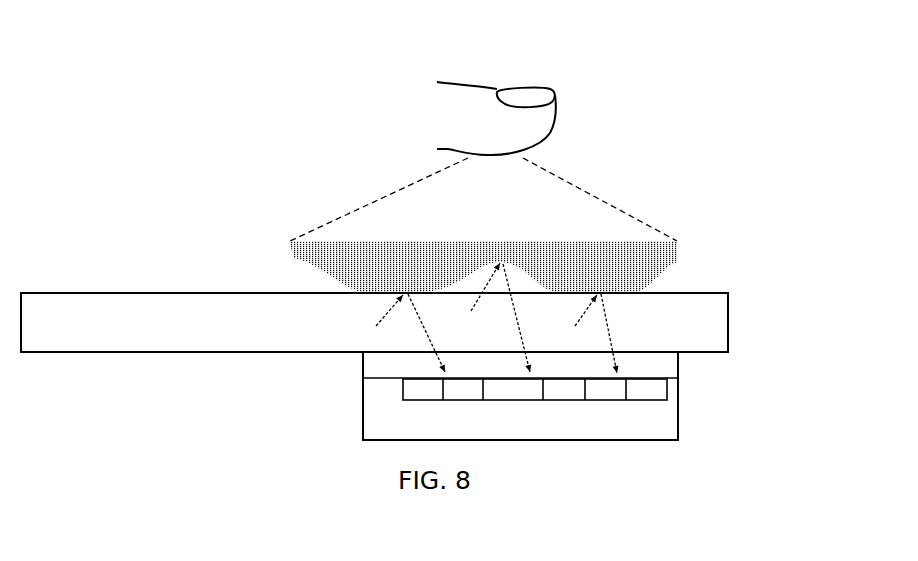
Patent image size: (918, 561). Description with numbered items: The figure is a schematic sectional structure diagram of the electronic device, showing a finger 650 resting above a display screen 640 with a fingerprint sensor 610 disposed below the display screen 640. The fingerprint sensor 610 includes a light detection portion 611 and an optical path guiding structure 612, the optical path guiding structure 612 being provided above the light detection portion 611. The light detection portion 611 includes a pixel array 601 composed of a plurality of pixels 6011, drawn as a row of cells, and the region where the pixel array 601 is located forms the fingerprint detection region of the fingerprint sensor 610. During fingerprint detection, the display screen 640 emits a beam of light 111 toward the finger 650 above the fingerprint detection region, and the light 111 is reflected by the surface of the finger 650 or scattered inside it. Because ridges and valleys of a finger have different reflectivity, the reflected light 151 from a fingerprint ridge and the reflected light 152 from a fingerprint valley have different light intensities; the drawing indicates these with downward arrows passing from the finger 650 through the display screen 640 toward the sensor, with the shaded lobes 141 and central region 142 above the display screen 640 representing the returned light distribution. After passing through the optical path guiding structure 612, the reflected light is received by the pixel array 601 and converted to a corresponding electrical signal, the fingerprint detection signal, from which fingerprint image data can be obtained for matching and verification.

The finger 650 is at (463, 92).
The display screen 640 is at (729, 322).
The central light region 142 is at (483, 266).
The light lobe region 141 is at (499, 284).
The light 111 is at (472, 302).
The reflected light from the ridge of the fingerprint 151 is at (527, 333).
The reflected light from the valley of the fingerprint 152 is at (523, 318).
The fingerprint sensor 610 is at (765, 358).
The optical path guiding structure 612 is at (679, 364).
The light detection portion 611 is at (679, 408).
The pixel array 601 is at (404, 390).
The pixel 6011 is at (534, 389).